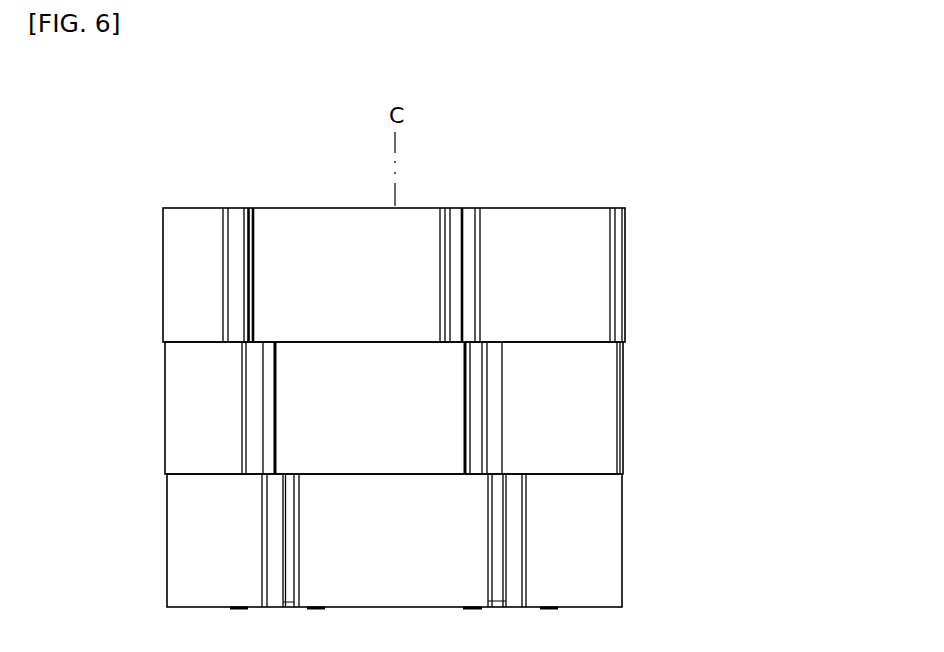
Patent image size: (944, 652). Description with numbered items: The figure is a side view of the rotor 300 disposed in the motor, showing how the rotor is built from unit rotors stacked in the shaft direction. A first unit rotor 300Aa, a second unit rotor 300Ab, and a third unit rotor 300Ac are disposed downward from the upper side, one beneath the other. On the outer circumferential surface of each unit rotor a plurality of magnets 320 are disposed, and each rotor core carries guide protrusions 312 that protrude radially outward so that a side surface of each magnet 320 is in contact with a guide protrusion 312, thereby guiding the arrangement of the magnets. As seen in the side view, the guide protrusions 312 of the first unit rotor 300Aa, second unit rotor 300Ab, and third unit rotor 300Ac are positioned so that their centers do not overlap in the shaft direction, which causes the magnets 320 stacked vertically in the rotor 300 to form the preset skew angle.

The rotor 300 is at (88, 107).
The first unit rotor 300Aa is at (646, 254).
The second unit rotor 300Ab is at (646, 387).
The third unit rotor 300Ac is at (646, 504).
The guide protrusion 312 is at (453, 247).
The magnet 320 is at (573, 298).